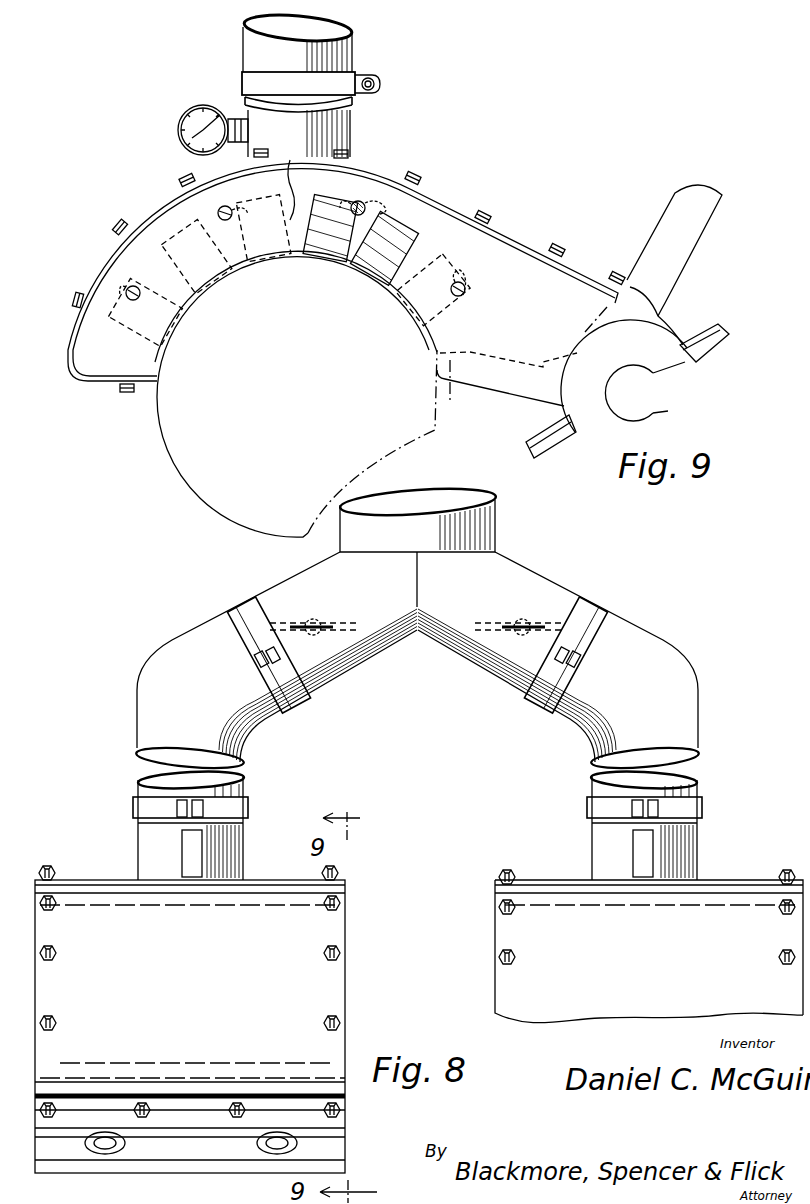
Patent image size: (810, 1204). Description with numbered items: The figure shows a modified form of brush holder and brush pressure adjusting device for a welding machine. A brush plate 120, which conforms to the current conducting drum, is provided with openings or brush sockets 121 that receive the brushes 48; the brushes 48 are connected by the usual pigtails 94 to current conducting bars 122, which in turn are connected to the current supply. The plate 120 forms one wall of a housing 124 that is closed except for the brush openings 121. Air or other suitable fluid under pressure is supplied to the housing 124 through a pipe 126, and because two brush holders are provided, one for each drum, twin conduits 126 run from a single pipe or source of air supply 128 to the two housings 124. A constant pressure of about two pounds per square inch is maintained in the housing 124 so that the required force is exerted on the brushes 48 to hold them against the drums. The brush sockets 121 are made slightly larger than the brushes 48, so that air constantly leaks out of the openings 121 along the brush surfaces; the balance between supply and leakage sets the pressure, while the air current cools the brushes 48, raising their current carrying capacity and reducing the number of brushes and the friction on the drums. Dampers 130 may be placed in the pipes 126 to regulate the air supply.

In FIG. 9, the brush 48 is at (363, 257).
In FIG. 9, the pigtail 94 is at (384, 212).
In FIG. 9, the brush plate 120 is at (510, 383).
In FIG. 9, the brush socket 121 is at (459, 390).
In FIG. 9, the current conducting bar 122 is at (355, 201).
In FIG. 9, the housing 124 is at (165, 208).
In FIG. 8, the housing 124 is at (333, 923).
In FIG. 9, the pipe 126 is at (355, 45).
In FIG. 8, the pipe 126 is at (247, 783).
In FIG. 8, the source of air supply 128 is at (495, 520).
In FIG. 8, the damper 130 is at (297, 621).